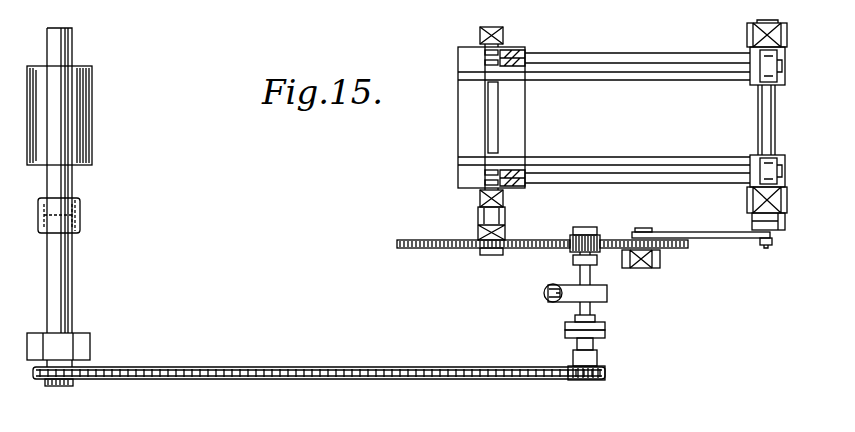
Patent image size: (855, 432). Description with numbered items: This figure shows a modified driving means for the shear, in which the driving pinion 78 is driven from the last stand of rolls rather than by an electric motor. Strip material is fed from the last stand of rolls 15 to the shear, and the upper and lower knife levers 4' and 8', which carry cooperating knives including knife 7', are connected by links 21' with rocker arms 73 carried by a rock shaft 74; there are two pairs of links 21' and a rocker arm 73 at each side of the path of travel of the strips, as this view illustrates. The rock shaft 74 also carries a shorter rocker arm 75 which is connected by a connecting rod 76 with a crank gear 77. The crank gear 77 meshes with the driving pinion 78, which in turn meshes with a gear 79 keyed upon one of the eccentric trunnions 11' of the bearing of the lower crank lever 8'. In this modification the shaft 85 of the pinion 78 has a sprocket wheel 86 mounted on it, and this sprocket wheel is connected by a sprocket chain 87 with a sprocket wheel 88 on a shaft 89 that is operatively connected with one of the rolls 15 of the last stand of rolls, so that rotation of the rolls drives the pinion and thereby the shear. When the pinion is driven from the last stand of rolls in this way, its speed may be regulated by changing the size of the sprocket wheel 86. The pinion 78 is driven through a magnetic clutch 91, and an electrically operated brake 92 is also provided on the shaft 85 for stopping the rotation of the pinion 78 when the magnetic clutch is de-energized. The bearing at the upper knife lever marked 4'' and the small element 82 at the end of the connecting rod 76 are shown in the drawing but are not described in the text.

The rolls of the last stand 15 is at (92, 118).
The shaft 89 is at (68, 270).
The sprocket wheel 88 is at (75, 383).
The sprocket chain 87 is at (352, 379).
The sprocket wheel 86 is at (595, 381).
The magnetic clutch 91 is at (605, 330).
The electrically operated brake 92 is at (607, 290).
The shaft 85 is at (580, 272).
The driving pinion 78 is at (572, 240).
The gear 79 is at (452, 250).
The eccentric trunnion 11' is at (490, 245).
The crank gear 77 is at (685, 252).
The connecting rod 76 is at (745, 238).
The stop 82 is at (768, 245).
The shorter rocker arm 75 is at (760, 226).
The rocker arm 73 is at (765, 170).
The rock shaft 74 is at (762, 115).
The links 21' is at (604, 117).
The lower knife lever 8' is at (476, 117).
The knife 7' is at (521, 117).
The upper knife lever 4' is at (474, 38).
The bearing 4'' is at (478, 192).